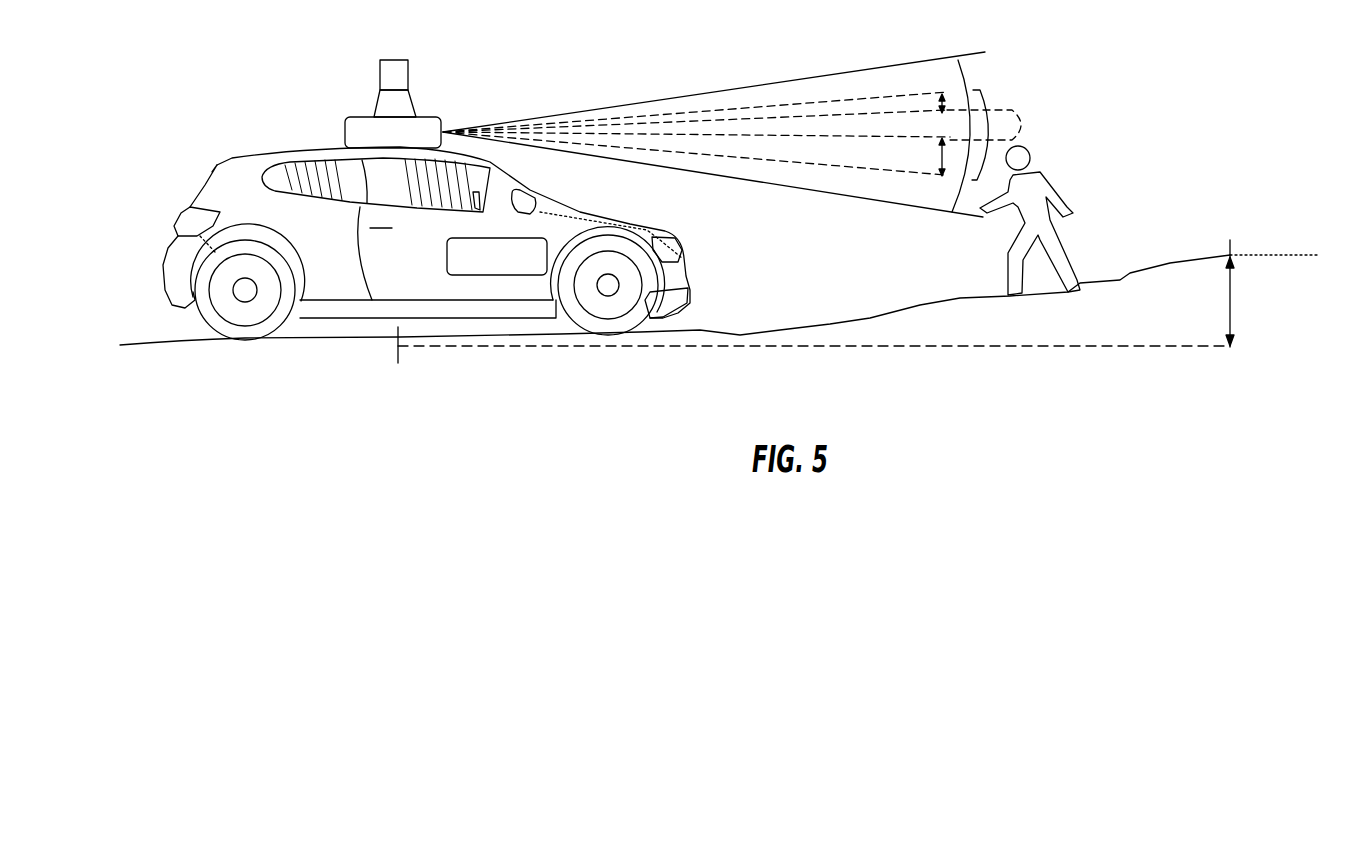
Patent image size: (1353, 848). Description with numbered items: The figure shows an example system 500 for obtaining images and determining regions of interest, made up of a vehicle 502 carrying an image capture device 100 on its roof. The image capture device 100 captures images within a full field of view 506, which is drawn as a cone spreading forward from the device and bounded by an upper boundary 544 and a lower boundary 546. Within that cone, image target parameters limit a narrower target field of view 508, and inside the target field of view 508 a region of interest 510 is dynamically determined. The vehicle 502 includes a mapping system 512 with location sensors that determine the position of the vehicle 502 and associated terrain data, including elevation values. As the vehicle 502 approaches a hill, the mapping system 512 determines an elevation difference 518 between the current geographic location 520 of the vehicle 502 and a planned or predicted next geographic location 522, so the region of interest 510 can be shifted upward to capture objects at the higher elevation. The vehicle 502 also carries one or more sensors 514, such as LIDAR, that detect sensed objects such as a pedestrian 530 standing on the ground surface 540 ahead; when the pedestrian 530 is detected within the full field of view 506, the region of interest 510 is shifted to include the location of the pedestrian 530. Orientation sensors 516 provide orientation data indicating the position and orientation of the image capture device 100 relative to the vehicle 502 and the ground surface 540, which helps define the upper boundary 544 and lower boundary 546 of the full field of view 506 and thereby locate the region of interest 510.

The image capture device 100 is at (393, 133).
The system 500 is at (538, 63).
The vehicle 502 is at (688, 282).
The full field of view 506 is at (967, 72).
The target field of view 508 is at (988, 100).
The region of interest 510 is at (1030, 127).
The mapping system 512 is at (515, 268).
The sensors 514 is at (412, 85).
The orientation sensors 516 is at (418, 108).
The elevation difference 518 is at (1232, 312).
The current geographic location 520 is at (400, 343).
The next geographic location 522 is at (1232, 243).
The pedestrian 530 is at (1073, 195).
The ground surface 540 is at (868, 318).
The upper boundary 544 is at (803, 78).
The lower boundary 546 is at (856, 196).